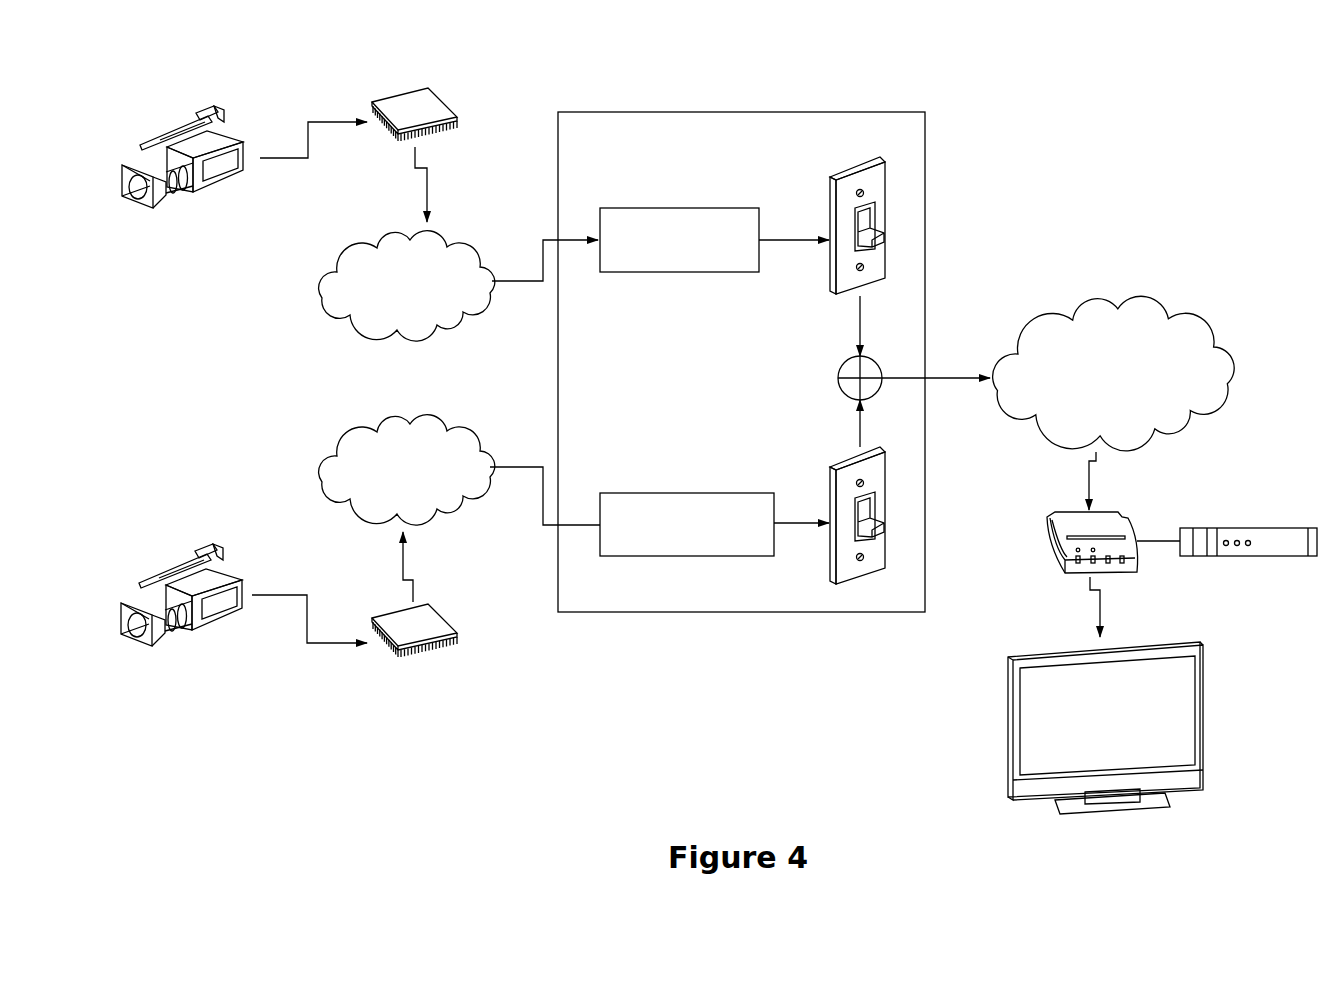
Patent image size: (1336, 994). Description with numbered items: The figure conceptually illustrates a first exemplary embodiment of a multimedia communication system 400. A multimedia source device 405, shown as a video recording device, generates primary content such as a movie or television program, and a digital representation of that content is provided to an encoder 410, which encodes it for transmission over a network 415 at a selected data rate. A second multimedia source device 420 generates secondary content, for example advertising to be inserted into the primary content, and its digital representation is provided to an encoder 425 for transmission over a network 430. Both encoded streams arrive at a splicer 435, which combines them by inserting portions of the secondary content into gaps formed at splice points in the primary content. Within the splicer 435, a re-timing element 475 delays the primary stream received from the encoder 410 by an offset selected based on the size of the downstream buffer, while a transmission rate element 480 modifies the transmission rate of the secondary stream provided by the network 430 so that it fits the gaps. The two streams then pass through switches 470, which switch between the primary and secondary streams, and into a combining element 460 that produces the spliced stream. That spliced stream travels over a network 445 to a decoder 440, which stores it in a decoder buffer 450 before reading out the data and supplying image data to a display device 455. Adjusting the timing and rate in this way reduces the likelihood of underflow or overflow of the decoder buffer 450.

The multimedia communication system 400 is at (1178, 114).
The multimedia source device 405 is at (150, 208).
The encoder 410 is at (445, 102).
The network 415 is at (318, 293).
The multimedia source device 420 is at (187, 630).
The encoder 425 is at (440, 648).
The network 430 is at (320, 478).
The splicer 435 is at (741, 335).
The decoder 440 is at (1073, 577).
The network 445 is at (1202, 320).
The decoder buffer 450 is at (1227, 557).
The display device 455 is at (1003, 772).
The combining element 460 is at (883, 367).
The switches 470 is at (886, 216).
The re-timing element 475 is at (642, 273).
The transmission rate element 480 is at (638, 557).